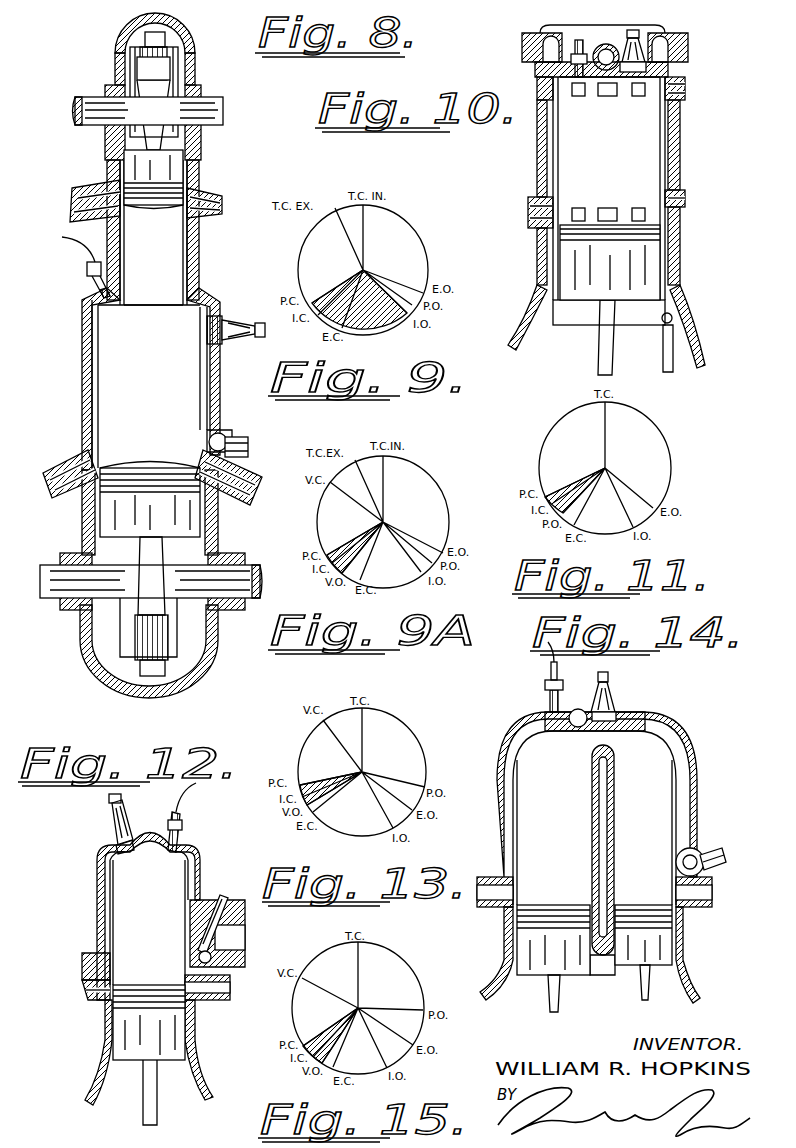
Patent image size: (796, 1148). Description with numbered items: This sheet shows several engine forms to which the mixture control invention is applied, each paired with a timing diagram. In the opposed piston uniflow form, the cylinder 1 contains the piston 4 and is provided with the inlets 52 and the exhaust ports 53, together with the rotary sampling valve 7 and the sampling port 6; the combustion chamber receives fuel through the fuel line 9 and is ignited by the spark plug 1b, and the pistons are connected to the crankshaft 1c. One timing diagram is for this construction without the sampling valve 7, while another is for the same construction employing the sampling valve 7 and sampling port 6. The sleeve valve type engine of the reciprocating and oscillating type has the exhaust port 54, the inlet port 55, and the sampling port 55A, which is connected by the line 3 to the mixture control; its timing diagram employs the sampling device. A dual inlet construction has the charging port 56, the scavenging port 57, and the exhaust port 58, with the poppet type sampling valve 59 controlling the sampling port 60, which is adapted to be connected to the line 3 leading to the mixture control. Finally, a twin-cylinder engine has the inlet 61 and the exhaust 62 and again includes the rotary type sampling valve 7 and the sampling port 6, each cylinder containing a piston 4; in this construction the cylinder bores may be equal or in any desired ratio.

In FIG. 8, the cylinder 1 is at (215, 398).
In FIG. 14, the cylinder 1 is at (499, 754).
In FIG. 12, the cylinder 1 is at (100, 906).
In FIG. 8, the spark plug 1b is at (232, 328).
In FIG. 10, the spark plug 1b is at (640, 40).
In FIG. 14, the spark plug 1b is at (612, 690).
In FIG. 12, the spark plug 1b is at (110, 820).
In FIG. 8, the crankshaft 1c is at (212, 112).
In FIG. 12, the pipe line 3 is at (243, 934).
In FIG. 8, the piston 4 is at (165, 167).
In FIG. 10, the piston 4 is at (632, 272).
In FIG. 14, the piston 4 is at (535, 965).
In FIG. 12, the piston 4 is at (165, 1030).
In FIG. 8, the sampling port 6 is at (216, 438).
In FIG. 14, the sampling port 6 is at (693, 850).
In FIG. 8, the rotary sampling valve 7 is at (229, 448).
In FIG. 14, the rotary sampling valve 7 is at (703, 861).
In FIG. 8, the fuel line 9 is at (88, 270).
In FIG. 10, the fuel line 9 is at (585, 48).
In FIG. 14, the fuel line 9 is at (548, 689).
In FIG. 12, the fuel line 9 is at (185, 831).
In FIG. 8, the inlets 52 is at (60, 490).
In FIG. 8, the exhaust ports 53 is at (82, 200).
In FIG. 10, the exhaust port 54 is at (688, 88).
In FIG. 10, the inlet port 55 is at (530, 215).
In FIG. 10, the sampling port 55A is at (688, 200).
In FIG. 12, the charging port 56 is at (85, 962).
In FIG. 12, the scavenging port 57 is at (95, 990).
In FIG. 12, the exhaust port 58 is at (215, 988).
In FIG. 12, the poppet type sampling valve 59 is at (232, 905).
In FIG. 12, the sampling port 60 is at (218, 958).
In FIG. 14, the inlet 61 is at (480, 907).
In FIG. 14, the exhaust 62 is at (708, 896).